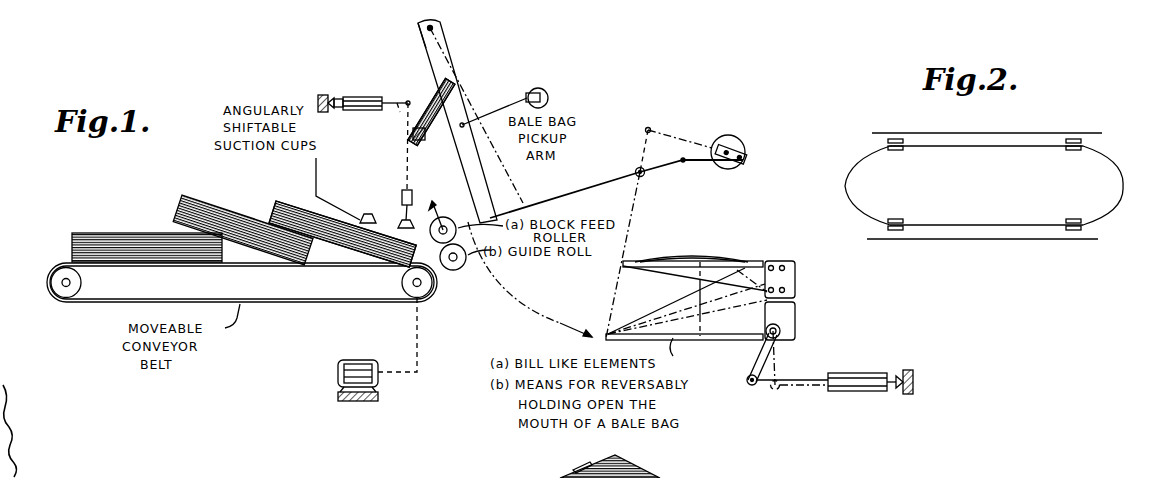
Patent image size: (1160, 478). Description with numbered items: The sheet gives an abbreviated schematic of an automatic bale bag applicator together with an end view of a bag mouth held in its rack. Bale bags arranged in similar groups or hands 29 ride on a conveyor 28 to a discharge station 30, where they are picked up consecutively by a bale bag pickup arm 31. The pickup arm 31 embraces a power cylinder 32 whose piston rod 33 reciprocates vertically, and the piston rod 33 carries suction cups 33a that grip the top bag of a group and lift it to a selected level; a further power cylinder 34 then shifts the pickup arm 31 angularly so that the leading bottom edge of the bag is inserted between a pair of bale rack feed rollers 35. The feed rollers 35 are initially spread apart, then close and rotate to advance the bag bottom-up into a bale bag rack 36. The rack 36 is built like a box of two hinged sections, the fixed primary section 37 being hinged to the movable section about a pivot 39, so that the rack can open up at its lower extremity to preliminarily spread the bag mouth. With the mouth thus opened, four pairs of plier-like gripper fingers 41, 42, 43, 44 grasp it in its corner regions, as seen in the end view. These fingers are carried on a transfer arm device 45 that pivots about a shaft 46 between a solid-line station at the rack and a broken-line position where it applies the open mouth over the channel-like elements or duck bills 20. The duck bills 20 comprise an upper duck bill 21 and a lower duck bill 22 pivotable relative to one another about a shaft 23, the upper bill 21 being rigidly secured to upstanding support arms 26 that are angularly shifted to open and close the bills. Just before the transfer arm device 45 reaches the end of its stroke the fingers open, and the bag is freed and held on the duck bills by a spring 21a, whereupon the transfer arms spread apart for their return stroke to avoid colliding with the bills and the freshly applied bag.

In FIG. 1, the channel-like elements 20 is at (759, 256).
In FIG. 1, the upper duck bill 21 is at (649, 260).
In FIG. 1, the spring 21a is at (686, 260).
In FIG. 1, the lower duck bill 22 is at (722, 336).
In FIG. 1, the shaft 23 is at (796, 334).
In FIG. 1, the support arms 26 is at (581, 468).
In FIG. 1, the conveyor 28 is at (257, 265).
In FIG. 1, the groups or hands of bale bags 29 is at (201, 194).
In FIG. 1, the discharge station 30 is at (360, 265).
In FIG. 1, the bale bag pickup arm 31 is at (398, 153).
In FIG. 1, the power cylinder 32 is at (390, 163).
In FIG. 1, the piston rod 33 is at (373, 206).
In FIG. 1, the suction cups 33a is at (367, 218).
In FIG. 1, the power cylinder 34 is at (353, 97).
In FIG. 1, the bale rack feed rollers 35 is at (453, 270).
In FIG. 1, the bale bag rack 36 is at (458, 66).
In FIG. 1, the primary section 37 is at (420, 39).
In FIG. 1, the pivot 39 is at (432, 28).
In FIG. 2, the gripper finger 41 is at (902, 150).
In FIG. 2, the gripper finger 42 is at (903, 220).
In FIG. 2, the gripper finger 43 is at (1068, 150).
In FIG. 2, the gripper finger 44 is at (1068, 220).
In FIG. 1, the transfer arm device 45 is at (627, 205).
In FIG. 1, the shaft 46 is at (646, 175).